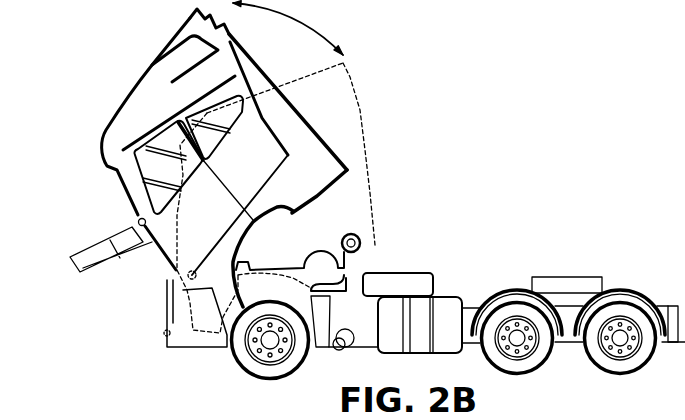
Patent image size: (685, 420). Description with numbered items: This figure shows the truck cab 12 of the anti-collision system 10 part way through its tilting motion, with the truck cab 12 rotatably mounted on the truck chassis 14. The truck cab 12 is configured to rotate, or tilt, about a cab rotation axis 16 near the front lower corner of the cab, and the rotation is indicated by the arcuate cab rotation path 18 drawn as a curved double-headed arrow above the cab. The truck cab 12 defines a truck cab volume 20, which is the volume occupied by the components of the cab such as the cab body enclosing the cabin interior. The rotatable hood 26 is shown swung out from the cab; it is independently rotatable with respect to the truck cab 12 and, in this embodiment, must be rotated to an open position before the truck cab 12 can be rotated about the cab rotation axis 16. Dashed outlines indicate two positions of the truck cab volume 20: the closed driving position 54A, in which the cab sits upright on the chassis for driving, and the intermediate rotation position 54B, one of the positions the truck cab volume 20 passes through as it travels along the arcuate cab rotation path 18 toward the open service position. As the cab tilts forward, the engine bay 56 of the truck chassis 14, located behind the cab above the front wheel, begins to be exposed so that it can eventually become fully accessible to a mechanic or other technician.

The anti-collision system 10 is at (129, 80).
The truck cab 12 is at (95, 145).
The truck chassis 14 is at (453, 285).
The cab rotation axis 16 is at (168, 275).
The arcuate cab rotation path 18 is at (297, 24).
The truck cab volume 20 is at (313, 127).
The rotatable hood 26 is at (90, 246).
The closed driving position 54A is at (370, 157).
The intermediate rotation position 54B is at (290, 95).
The engine bay 56 is at (272, 256).